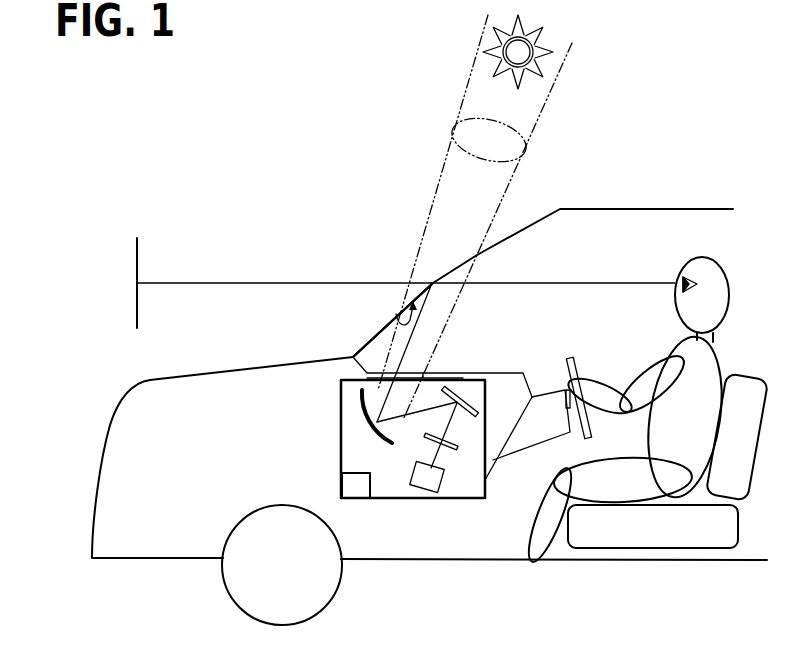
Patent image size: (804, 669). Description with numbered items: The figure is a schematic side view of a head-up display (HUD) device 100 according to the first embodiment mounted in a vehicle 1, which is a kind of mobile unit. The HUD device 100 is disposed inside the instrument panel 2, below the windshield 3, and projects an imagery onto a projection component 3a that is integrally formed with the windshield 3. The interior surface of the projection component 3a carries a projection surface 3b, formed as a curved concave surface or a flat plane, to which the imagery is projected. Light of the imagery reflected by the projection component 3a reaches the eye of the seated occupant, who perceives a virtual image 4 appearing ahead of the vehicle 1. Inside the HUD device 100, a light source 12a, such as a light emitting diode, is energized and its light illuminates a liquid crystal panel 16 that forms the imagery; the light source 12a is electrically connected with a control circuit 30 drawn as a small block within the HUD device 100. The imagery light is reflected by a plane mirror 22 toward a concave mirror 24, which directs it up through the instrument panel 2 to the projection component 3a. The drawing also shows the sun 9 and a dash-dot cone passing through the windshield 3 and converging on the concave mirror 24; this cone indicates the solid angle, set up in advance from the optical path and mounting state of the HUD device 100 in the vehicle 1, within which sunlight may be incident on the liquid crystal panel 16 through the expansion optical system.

The vehicle 1 is at (698, 208).
The instrument panel 2 is at (498, 373).
The windshield 3 is at (374, 336).
The projection component 3a is at (393, 320).
The projection surface 3b is at (396, 314).
The virtual image 4 is at (140, 247).
The sun 9 is at (540, 30).
The light source 12a is at (418, 489).
The liquid crystal panel 16 is at (452, 452).
The plane mirror 22 is at (458, 388).
The concave mirror 24 is at (362, 394).
The control circuit 30 is at (342, 478).
The head-up display (HUD) device 100 is at (326, 448).